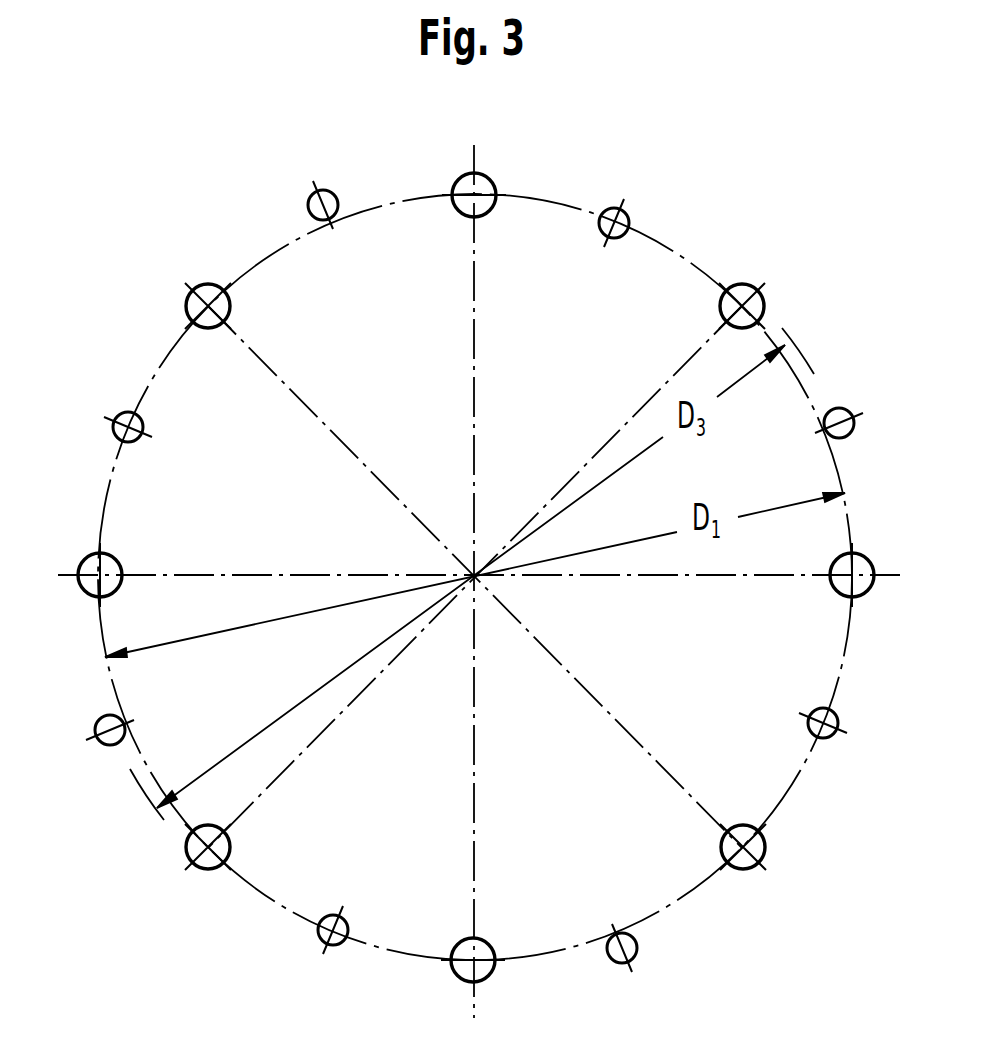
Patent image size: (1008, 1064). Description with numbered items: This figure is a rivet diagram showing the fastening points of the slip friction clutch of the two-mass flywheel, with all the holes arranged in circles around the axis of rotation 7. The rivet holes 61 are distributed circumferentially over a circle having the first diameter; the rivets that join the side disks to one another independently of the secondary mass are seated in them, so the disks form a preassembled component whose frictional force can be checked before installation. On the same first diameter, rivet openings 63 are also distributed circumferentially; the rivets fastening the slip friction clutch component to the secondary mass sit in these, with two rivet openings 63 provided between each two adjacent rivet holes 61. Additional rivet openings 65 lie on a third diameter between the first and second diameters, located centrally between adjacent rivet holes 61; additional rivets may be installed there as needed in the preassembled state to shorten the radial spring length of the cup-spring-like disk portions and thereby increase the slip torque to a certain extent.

The axis of rotation 7 is at (470, 582).
The rivet holes 61 is at (628, 210).
The rivet openings 63 is at (90, 560).
The additional rivet openings 65 is at (326, 190).